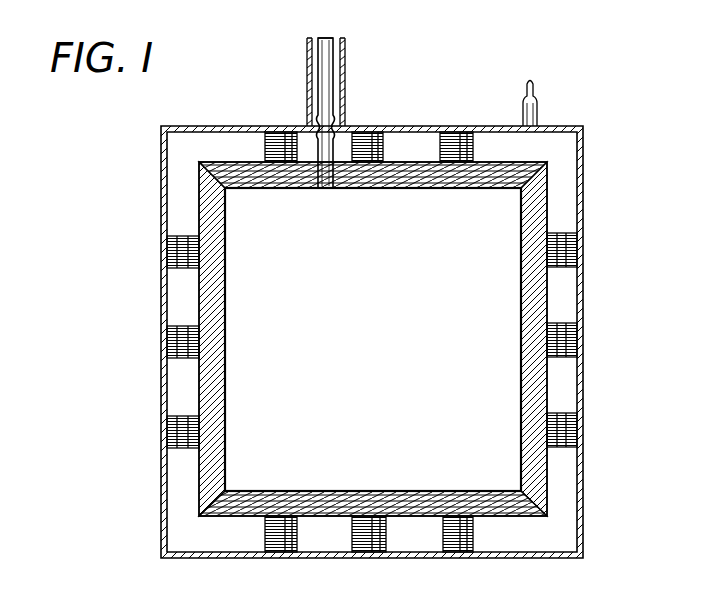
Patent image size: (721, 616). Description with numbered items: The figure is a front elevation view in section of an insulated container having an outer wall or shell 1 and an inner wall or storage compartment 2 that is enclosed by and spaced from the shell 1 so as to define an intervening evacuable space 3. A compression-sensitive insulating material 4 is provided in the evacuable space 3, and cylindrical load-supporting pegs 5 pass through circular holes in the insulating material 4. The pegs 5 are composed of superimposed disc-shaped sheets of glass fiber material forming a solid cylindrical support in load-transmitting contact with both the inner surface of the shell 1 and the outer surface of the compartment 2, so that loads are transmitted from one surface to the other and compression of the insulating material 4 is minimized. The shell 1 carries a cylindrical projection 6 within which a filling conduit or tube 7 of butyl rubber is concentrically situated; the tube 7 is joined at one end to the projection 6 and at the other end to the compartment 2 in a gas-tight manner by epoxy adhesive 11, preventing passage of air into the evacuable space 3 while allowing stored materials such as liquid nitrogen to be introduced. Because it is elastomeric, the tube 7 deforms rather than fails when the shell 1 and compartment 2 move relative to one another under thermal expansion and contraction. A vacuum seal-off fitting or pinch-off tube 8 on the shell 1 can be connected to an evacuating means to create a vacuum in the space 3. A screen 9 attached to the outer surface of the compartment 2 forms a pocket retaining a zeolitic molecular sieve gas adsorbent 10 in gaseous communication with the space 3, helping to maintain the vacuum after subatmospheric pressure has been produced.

The outer wall or shell 1 is at (583, 181).
The inner wall or storage compartment 2 is at (518, 213).
The evacuable space 3 is at (567, 295).
The compression-sensitive insulating material 4 is at (538, 393).
The load-supporting pegs 5 is at (568, 431).
The cylindrical projection 6 is at (346, 72).
The filling conduit or tube 7 is at (322, 85).
The vacuum seal-off fitting or pinch-off tube 8 is at (540, 104).
The screen 9 is at (245, 520).
The zeolitic molecular sieve gas adsorbent 10 is at (335, 520).
The epoxy adhesive 11 is at (318, 46).